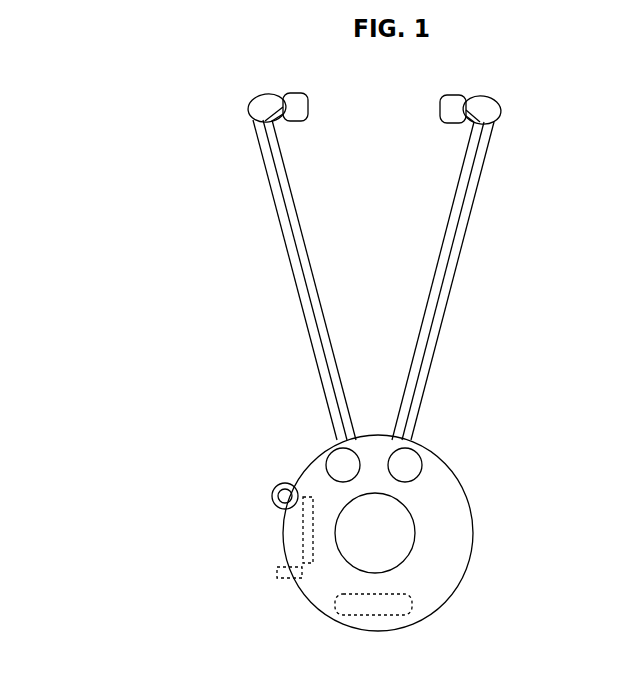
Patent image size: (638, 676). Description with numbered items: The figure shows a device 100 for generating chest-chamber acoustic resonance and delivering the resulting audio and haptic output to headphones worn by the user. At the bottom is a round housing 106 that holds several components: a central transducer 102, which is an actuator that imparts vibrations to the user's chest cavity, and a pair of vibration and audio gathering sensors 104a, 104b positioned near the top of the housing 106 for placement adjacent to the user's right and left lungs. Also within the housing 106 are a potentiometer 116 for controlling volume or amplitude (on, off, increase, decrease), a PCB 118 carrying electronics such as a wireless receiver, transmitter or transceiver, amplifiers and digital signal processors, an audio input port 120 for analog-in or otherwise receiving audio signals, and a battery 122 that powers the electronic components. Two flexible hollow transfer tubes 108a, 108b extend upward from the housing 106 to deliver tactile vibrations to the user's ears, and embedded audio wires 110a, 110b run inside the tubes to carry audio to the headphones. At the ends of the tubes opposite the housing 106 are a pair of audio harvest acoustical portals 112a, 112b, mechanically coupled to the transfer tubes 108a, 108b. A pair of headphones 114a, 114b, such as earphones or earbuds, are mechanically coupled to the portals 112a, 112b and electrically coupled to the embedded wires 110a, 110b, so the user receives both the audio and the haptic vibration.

The device 100 is at (104, 78).
The transducer 102 is at (412, 517).
The vibration and audio gathering sensor 104a is at (423, 470).
The vibration and audio gathering sensor 104b is at (325, 463).
The housing 106 is at (473, 552).
The flexible hollow transfer tube 108a is at (460, 263).
The flexible hollow transfer tube 108b is at (285, 243).
The embedded audio wire 110a is at (437, 332).
The embedded audio wire 110b is at (315, 317).
The audio harvest acoustical portal 112a is at (500, 107).
The audio harvest acoustical portal 112b is at (250, 106).
The headphone 114a is at (453, 95).
The headphone 114b is at (291, 93).
The potentiometer 116 is at (272, 492).
The PCB 118 is at (303, 532).
The audio input port 120 is at (280, 578).
The battery 122 is at (411, 601).